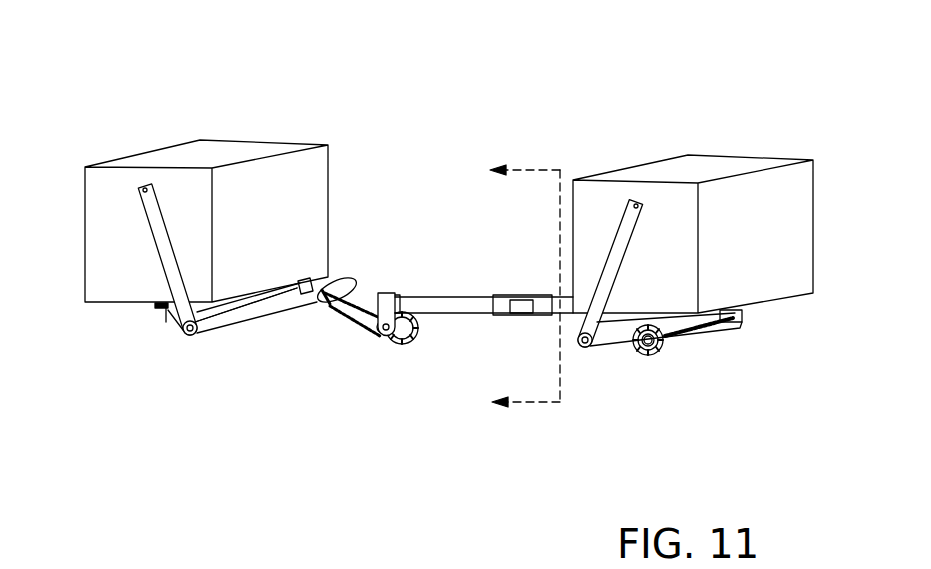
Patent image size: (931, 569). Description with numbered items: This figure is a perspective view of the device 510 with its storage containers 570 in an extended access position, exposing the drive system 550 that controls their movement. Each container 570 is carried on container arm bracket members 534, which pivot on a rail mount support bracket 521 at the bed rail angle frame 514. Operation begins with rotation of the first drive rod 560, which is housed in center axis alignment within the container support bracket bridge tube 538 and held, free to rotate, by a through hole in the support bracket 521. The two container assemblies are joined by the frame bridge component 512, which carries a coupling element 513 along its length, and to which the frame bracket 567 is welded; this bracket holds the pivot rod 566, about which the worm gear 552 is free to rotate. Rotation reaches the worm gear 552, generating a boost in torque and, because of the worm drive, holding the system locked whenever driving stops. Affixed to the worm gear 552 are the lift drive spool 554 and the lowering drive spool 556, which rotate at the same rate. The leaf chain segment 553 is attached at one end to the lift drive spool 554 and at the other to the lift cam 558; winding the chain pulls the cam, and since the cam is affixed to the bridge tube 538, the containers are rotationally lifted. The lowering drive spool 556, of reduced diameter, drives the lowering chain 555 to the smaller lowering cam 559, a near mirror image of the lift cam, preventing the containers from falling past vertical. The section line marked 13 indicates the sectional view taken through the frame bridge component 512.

The device 510 is at (175, 68).
The frame bridge component 512 is at (427, 297).
The hitch coupling 513 is at (505, 297).
The bed rail angle frame 514 is at (160, 308).
The rail mount support bracket 521 is at (185, 332).
The container arm bracket members 534 is at (143, 212).
The container support bracket bridge tube 538 is at (222, 328).
The drive system 550 is at (313, 397).
The worm gear 552 is at (410, 342).
The leaf chain segment 553 is at (335, 320).
The lift drive spool 554 is at (401, 345).
The lowering chain 555 is at (372, 290).
The lowering drive spool 556 is at (390, 345).
The lift cam 558 is at (342, 285).
The lowering cam 559 is at (293, 300).
The first drive rod 560 is at (180, 337).
The pivot rod 566 is at (365, 327).
The frame bracket 567 is at (395, 293).
The storage container 570 is at (230, 140).
The section line 13- 13 is at (510, 286).